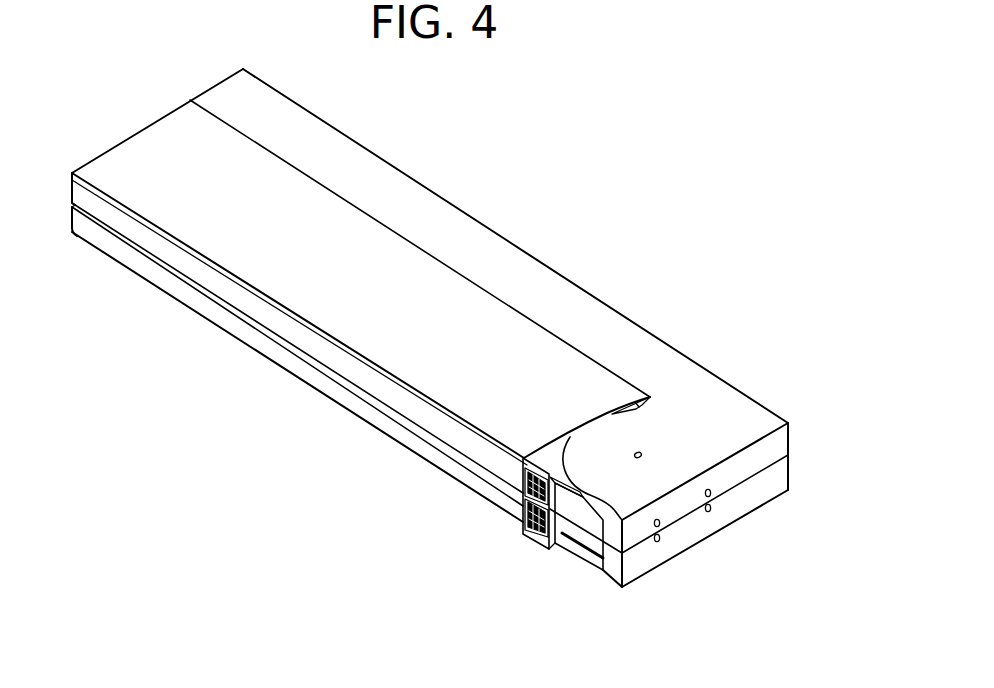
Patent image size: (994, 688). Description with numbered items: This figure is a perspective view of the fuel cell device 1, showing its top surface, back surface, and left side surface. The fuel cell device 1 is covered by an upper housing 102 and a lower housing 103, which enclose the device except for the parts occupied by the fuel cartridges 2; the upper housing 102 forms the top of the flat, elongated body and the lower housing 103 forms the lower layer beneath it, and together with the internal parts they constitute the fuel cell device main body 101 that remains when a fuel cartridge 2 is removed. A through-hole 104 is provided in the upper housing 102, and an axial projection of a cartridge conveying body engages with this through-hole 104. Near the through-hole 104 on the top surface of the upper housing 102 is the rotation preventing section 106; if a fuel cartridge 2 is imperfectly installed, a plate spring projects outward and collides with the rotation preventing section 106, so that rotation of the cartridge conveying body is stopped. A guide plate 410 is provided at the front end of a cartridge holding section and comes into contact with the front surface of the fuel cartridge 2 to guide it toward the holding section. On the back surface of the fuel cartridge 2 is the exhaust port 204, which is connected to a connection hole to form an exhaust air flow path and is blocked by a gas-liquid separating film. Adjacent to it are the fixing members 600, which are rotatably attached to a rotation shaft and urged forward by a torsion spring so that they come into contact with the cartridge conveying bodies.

The fuel cell device 1 is at (603, 152).
The fuel cartridge 2 is at (285, 323).
The fuel cell device main body 101 is at (547, 240).
The upper housing 102 is at (738, 403).
The lower housing 103 is at (781, 476).
The through-hole 104 is at (642, 453).
The rotation preventing section 106 is at (655, 405).
The exhaust port 204 is at (525, 497).
The guide plate 410 is at (614, 412).
The fixing member 600 is at (568, 506).